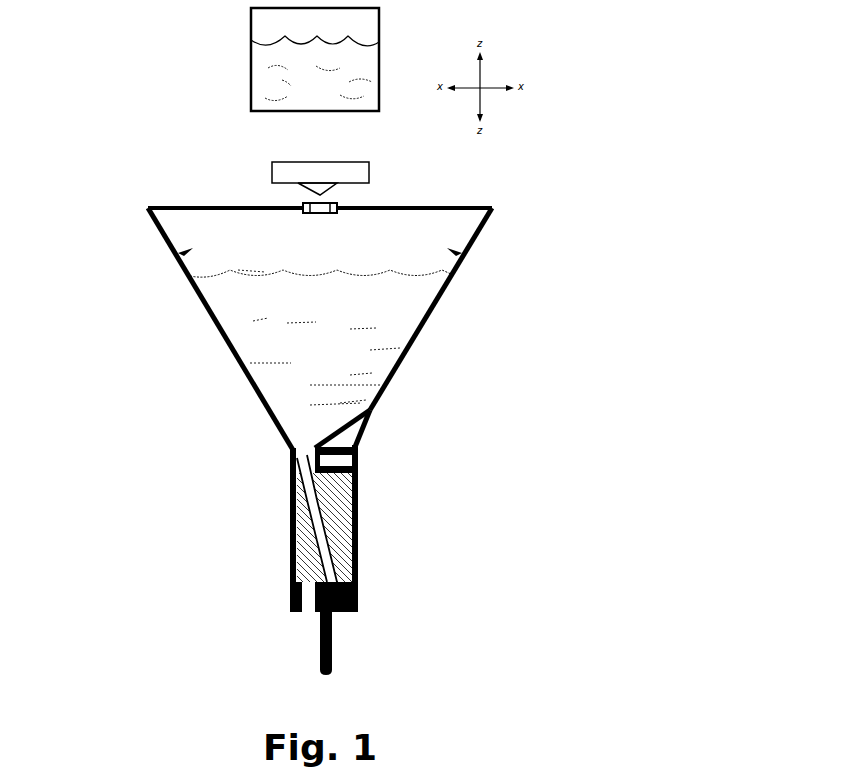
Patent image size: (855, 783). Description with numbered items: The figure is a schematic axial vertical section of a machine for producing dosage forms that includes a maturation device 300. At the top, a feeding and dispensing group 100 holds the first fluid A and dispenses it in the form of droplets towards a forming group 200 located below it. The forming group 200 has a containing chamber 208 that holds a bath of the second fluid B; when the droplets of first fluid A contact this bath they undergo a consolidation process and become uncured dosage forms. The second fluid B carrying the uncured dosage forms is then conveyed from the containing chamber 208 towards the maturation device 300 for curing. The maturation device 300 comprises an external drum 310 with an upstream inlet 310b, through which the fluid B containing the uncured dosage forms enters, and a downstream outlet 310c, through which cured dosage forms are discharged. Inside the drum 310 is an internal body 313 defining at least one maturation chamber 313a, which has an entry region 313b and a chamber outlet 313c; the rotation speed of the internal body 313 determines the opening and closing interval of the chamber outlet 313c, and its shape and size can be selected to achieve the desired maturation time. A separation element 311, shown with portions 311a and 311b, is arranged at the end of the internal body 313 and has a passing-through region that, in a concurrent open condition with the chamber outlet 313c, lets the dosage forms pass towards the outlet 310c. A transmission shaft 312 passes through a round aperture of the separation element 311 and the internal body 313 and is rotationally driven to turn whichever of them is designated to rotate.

The feeding and dispensing group 100 is at (233, 100).
The forming group 200 is at (153, 308).
The containing chamber 208 is at (388, 293).
The maturation device 300 is at (450, 478).
The external drum 310 is at (282, 507).
The upstream inlet 310b is at (307, 470).
The downstream outlet 310c is at (307, 622).
The separation element 311 is at (316, 598).
The left base portion 311a is at (299, 598).
The right base portion 311b is at (365, 602).
The transmission shaft 312 is at (342, 657).
The internal body 313 is at (321, 510).
The maturation chamber 313a is at (323, 508).
The inlet end of channel 313b is at (300, 453).
The chamber outlet 313c is at (346, 569).